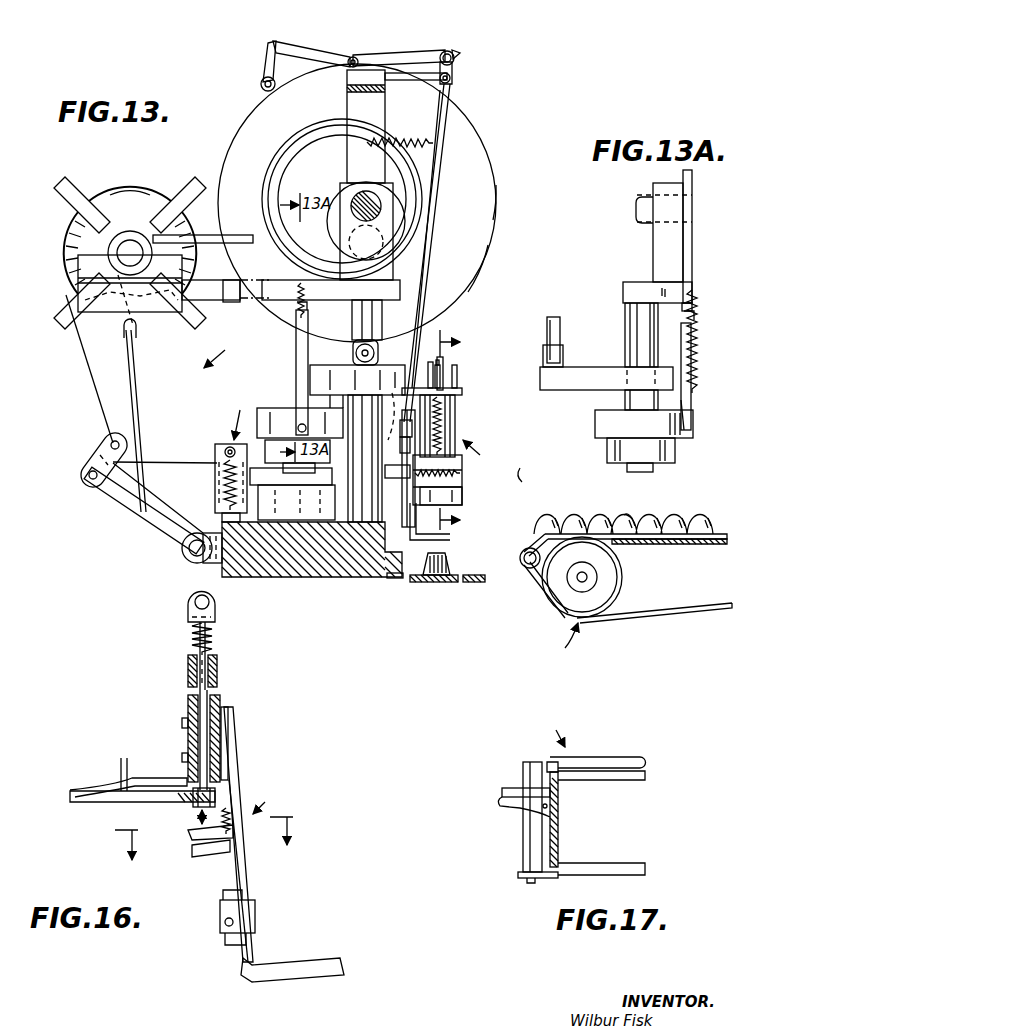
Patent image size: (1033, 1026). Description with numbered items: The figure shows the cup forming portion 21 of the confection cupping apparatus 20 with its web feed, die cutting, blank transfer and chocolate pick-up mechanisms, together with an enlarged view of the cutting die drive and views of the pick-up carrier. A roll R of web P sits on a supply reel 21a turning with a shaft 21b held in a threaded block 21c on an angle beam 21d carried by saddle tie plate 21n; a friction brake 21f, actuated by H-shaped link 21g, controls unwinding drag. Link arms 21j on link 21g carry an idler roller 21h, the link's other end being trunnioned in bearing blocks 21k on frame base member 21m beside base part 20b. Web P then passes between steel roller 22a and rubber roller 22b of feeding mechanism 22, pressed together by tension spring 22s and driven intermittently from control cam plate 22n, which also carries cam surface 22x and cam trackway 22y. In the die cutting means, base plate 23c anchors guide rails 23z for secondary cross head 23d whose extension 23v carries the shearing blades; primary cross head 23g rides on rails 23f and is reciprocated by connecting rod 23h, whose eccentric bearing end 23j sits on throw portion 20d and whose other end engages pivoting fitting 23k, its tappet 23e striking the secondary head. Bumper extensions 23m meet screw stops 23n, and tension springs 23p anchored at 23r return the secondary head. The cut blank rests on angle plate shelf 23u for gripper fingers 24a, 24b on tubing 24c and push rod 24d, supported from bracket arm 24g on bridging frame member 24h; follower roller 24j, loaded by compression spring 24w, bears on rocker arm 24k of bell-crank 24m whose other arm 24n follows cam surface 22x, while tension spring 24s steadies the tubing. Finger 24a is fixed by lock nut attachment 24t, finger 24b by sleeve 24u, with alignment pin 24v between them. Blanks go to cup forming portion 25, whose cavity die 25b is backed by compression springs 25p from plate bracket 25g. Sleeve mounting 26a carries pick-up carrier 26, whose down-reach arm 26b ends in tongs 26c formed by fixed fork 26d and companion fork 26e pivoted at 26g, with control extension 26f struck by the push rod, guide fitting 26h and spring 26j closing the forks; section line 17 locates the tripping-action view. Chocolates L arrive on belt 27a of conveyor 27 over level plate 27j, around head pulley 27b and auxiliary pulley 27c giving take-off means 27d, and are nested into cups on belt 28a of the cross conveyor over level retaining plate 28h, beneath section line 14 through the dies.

In FIG. 13, the apparatus 20 is at (494, 138).
In FIG. 13, the pivot boss 20b is at (181, 546).
In FIG. 13, the throw portion 20d is at (360, 200).
In FIG. 13A, the throw portion 20d is at (637, 207).
In FIG. 13, the cup forming portion 21 is at (221, 349).
In FIG. 13, the supply reel 21a is at (125, 218).
In FIG. 13, the shaft 21b is at (118, 253).
In FIG. 13, the threaded block 21c is at (83, 271).
In FIG. 13, the angle beam 21d is at (222, 280).
In FIG. 13, the friction brake 21f is at (247, 228).
In FIG. 13, the H-shaped link 21g is at (121, 505).
In FIG. 13, the idler roller 21h is at (347, 108).
In FIG. 13, the link arms 21j is at (92, 458).
In FIG. 13, the bearing blocks 21k is at (200, 565).
In FIG. 13, the frame base member 21m is at (320, 572).
In FIG. 13A, the saddle tie plate 21n is at (638, 282).
In FIG. 13, the feeding mechanism 22 is at (230, 416).
In FIG. 13, the lower steel roller 22a is at (215, 471).
In FIG. 13, the upper rubber roller 22b is at (229, 447).
In FIG. 13, the control cam plate 22n is at (480, 264).
In FIG. 13, the tension spring 22s is at (224, 495).
In FIG. 13, the cam surface 22x is at (499, 191).
In FIG. 13, the cam trackway 22y is at (300, 143).
In FIG. 13, the base plate 23c is at (282, 520).
In FIG. 13, the secondary cross head 23d is at (290, 408).
In FIG. 13A, the secondary cross head 23d is at (667, 420).
In FIG. 13, the adjustable pressure tappet 23e is at (345, 366).
In FIG. 13, the slideway guide rails 23f is at (366, 522).
In FIG. 13A, the slideway guide rails 23f is at (630, 335).
In FIG. 13A, the primary cross head 23g is at (695, 388).
In FIG. 13, the connecting rod 23h is at (331, 290).
In FIG. 13A, the connecting rod 23h is at (555, 322).
In FIG. 13, the eccentric bearing end 23j is at (378, 352).
In FIG. 13, the pivoting fitting 23k is at (352, 345).
In FIG. 13A, the pivoting fitting 23k is at (545, 355).
In FIG. 13, the bumper extensions 23m is at (296, 330).
In FIG. 13A, the bumper extensions 23m is at (697, 341).
In FIG. 13A, the screw stops 23n is at (697, 322).
In FIG. 13, the tension springs 23p is at (288, 296).
In FIG. 13A, the tension springs 23p is at (697, 302).
In FIG. 13A, the spring anchor 23r is at (694, 290).
In FIG. 13, the lower angle plate 23u is at (386, 492).
In FIG. 13, the underside extension 23v is at (287, 410).
In FIG. 13, the slideway posts 23z is at (291, 477).
In FIG. 13, the gripper finger 24a is at (526, 466).
In FIG. 16, the gripper finger 24a is at (147, 790).
In FIG. 13, the gripper finger 24b is at (450, 537).
In FIG. 16, the gripper finger 24b is at (150, 806).
In FIG. 13, the tubing 24c is at (425, 320).
In FIG. 16, the tubing 24c is at (218, 668).
In FIG. 16, the push rod 24d is at (192, 702).
In FIG. 13, the bracket arm 24g is at (261, 82).
In FIG. 13, the bridging frame member 24h is at (373, 76).
In FIG. 13A, the bridging frame member 24h is at (653, 241).
In FIG. 13, the follower roller 24j is at (455, 58).
In FIG. 16, the follower roller 24j is at (187, 608).
In FIG. 13, the rocker arm 24k is at (456, 52).
In FIG. 13, the bell-crank 24m is at (354, 54).
In FIG. 13, the rocker arm 24n is at (315, 50).
In FIG. 13, the tension spring 24s is at (422, 140).
In FIG. 16, the lock nut attachment 24t is at (218, 800).
In FIG. 16, the sleeve 24u is at (185, 747).
In FIG. 16, the alignment pin 24v is at (123, 776).
In FIG. 13, the compression spring 24w is at (452, 78).
In FIG. 16, the compression spring 24w is at (215, 645).
In FIG. 13, the cup forming portion 25 is at (483, 453).
In FIG. 13, the cavity die 25b is at (462, 493).
In FIG. 13, the plate bracket 25g is at (446, 410).
In FIG. 13, the coil compression springs 25p is at (456, 433).
In FIG. 16, the confection pick-up-depositing carrier 26 is at (268, 799).
In FIG. 17, the confection pick-up-depositing carrier 26 is at (546, 733).
In FIG. 16, the sleeve mounting 26a is at (224, 732).
In FIG. 16, the down-reach arm 26b is at (251, 880).
In FIG. 13, the tongs 26c is at (430, 580).
In FIG. 17, the tongs 26c is at (618, 783).
In FIG. 16, the fixed fork 26d is at (318, 960).
In FIG. 17, the fixed fork 26d is at (647, 872).
In FIG. 17, the companion fork 26e is at (647, 778).
In FIG. 16, the control extension 26f is at (188, 836).
In FIG. 17, the control extension 26f is at (510, 815).
In FIG. 13, the pivot 26g is at (462, 478).
In FIG. 16, the pivot 26g is at (205, 858).
In FIG. 17, the pivot 26g is at (517, 788).
In FIG. 16, the band and guide fitting 26h is at (256, 922).
In FIG. 17, the band and guide fitting 26h is at (528, 860).
In FIG. 16, the spring 26j is at (233, 828).
In FIG. 13, the conveyor 27 is at (562, 641).
In FIG. 13, the belt 27a is at (628, 612).
In FIG. 13, the head pulley 27b is at (567, 597).
In FIG. 13, the auxiliary pulley 27c is at (523, 551).
In FIG. 13, the take-off means 27d is at (536, 530).
In FIG. 13, the level retaining plate 27j is at (712, 545).
In FIG. 13, the belt 28a is at (470, 583).
In FIG. 13, the level retaining plate 28h is at (455, 575).
In FIG. 13, the section line 14 is at (462, 430).
In FIG. 16, the section line 17 is at (213, 839).
In FIG. 13, the chocolate L is at (621, 517).
In FIG. 13, the web P is at (171, 461).
In FIG. 13, the roll R is at (158, 191).